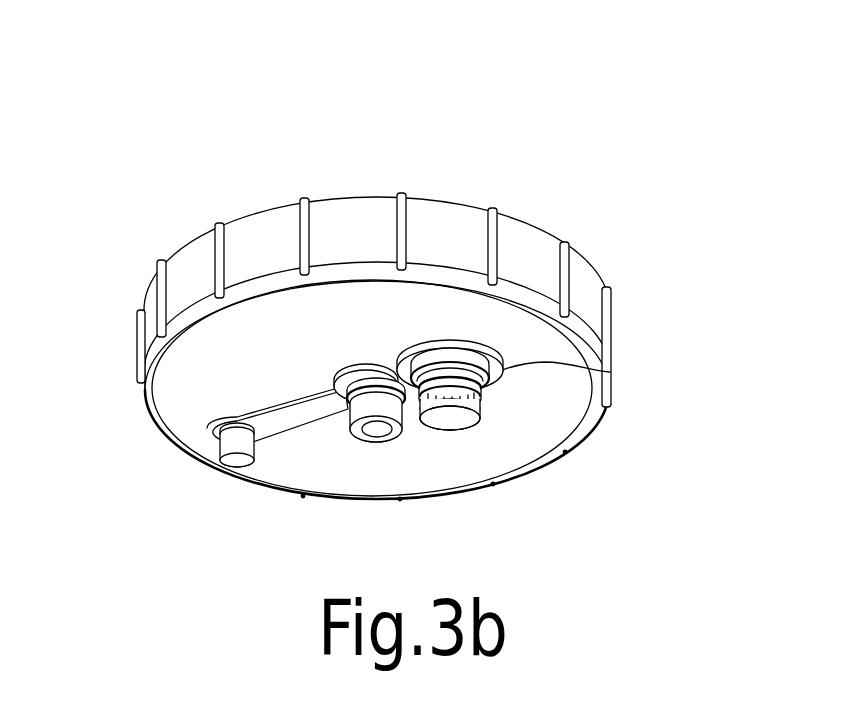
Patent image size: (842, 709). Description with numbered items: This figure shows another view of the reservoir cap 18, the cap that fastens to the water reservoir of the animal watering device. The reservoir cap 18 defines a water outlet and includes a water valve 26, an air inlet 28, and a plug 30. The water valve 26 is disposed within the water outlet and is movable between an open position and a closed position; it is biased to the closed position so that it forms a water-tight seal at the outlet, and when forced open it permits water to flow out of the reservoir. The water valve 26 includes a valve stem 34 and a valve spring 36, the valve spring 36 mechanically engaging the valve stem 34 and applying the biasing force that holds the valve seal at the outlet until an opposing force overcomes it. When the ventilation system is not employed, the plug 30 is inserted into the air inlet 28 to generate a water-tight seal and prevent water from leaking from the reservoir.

The reservoir cap 18 is at (207, 185).
The water valve 26 is at (463, 417).
The air inlet 28 is at (373, 428).
The plug 30 is at (290, 420).
The valve stem 34 is at (438, 418).
The valve spring 36 is at (608, 372).